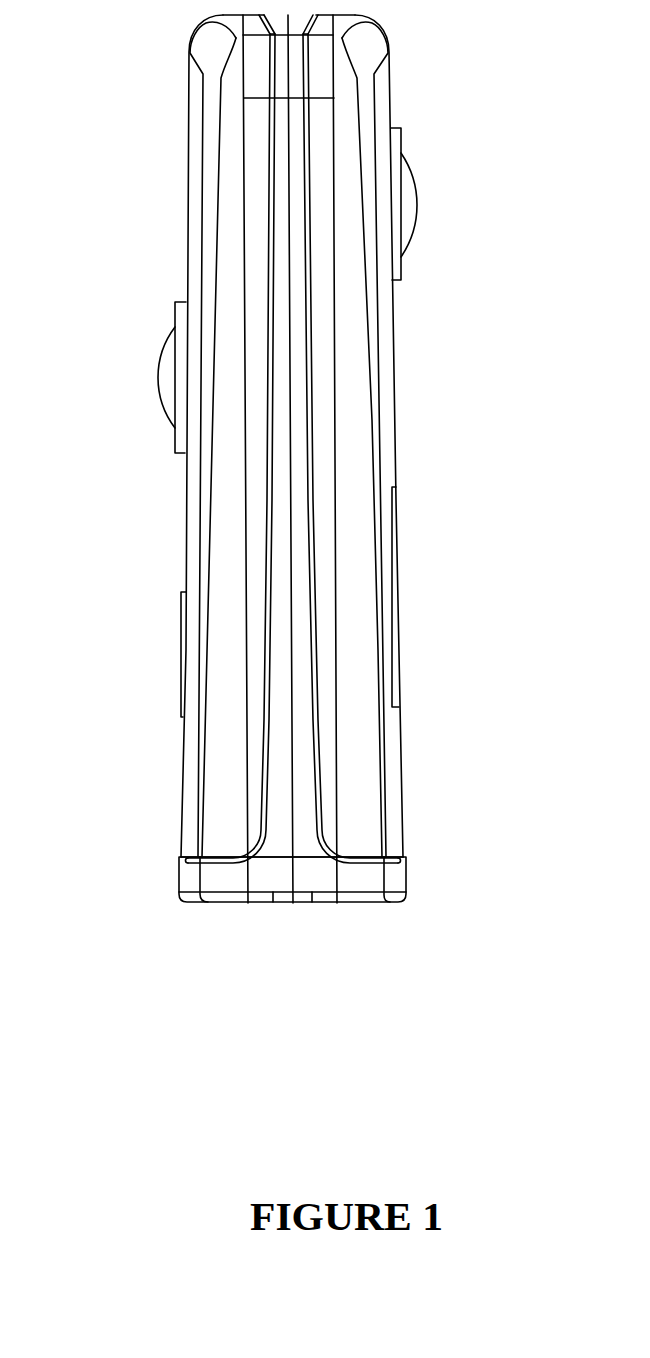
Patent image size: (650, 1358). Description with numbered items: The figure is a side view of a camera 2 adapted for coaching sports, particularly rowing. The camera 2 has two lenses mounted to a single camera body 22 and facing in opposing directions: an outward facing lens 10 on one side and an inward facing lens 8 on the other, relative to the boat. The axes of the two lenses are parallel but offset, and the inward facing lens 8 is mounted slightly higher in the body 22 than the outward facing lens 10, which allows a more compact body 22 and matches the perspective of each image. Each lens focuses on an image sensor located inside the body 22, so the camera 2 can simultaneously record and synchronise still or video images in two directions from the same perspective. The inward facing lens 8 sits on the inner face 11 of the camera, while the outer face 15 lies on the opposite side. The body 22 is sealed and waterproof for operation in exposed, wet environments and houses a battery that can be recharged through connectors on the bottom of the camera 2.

The camera 2 is at (417, 735).
The inward facing lens 8 is at (417, 212).
The outward facing lens 10 is at (158, 393).
The inner face 11 is at (397, 612).
The outer face 15 is at (183, 775).
The camera body 22 is at (348, 532).